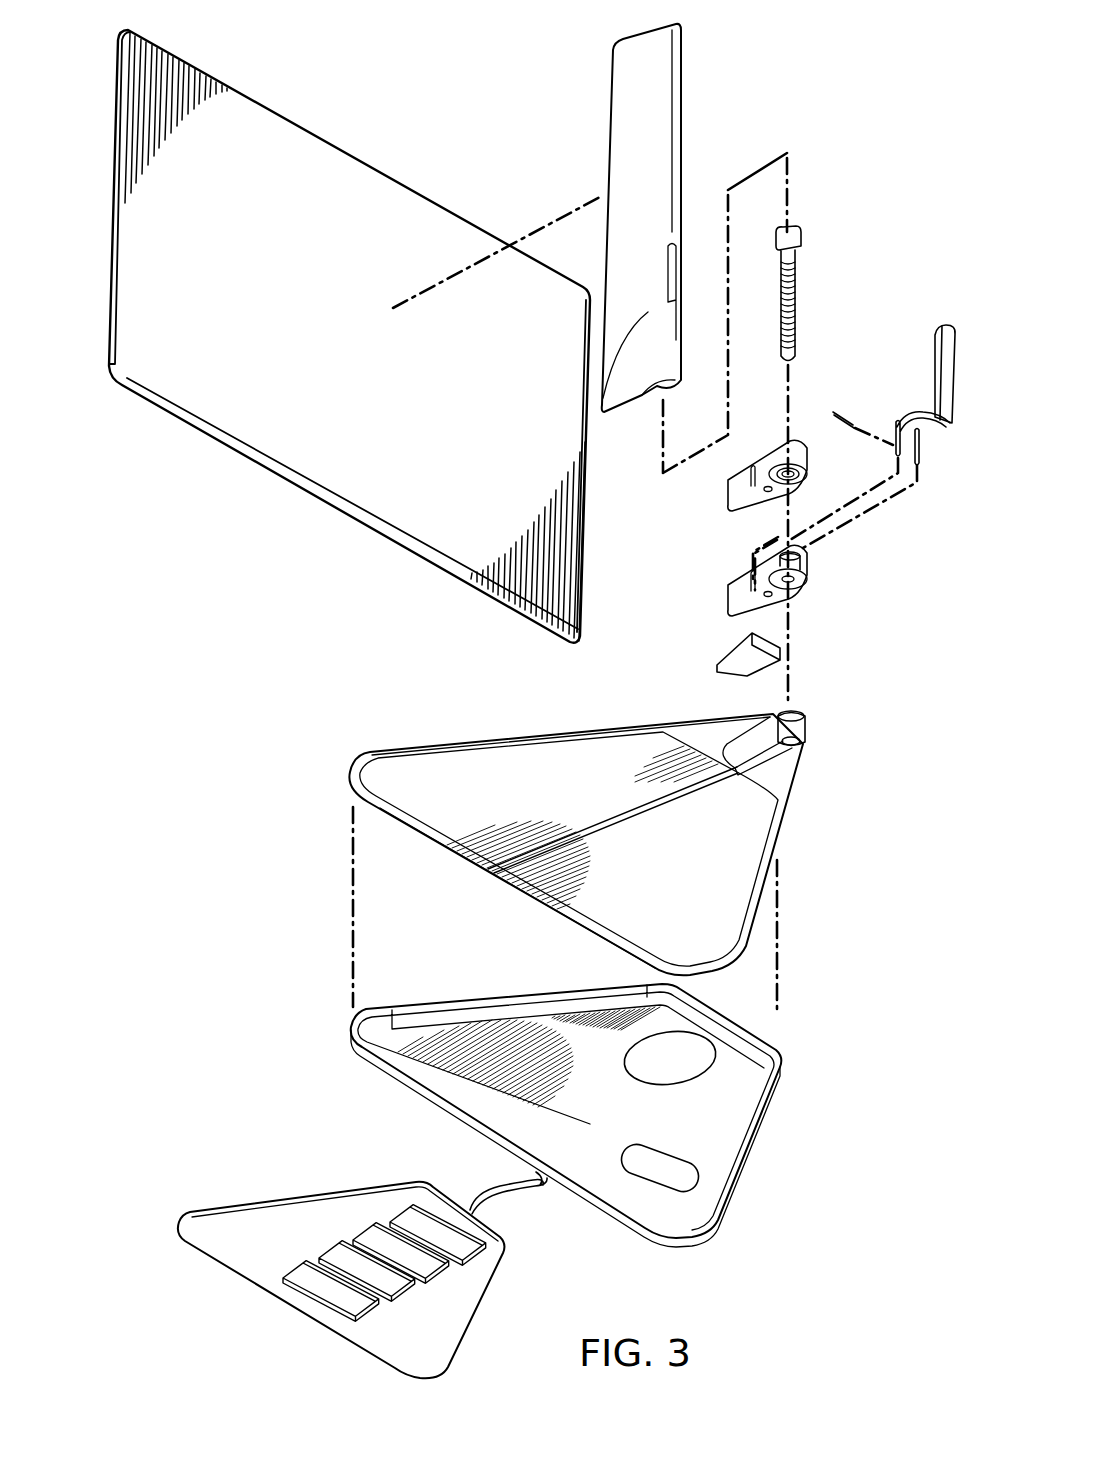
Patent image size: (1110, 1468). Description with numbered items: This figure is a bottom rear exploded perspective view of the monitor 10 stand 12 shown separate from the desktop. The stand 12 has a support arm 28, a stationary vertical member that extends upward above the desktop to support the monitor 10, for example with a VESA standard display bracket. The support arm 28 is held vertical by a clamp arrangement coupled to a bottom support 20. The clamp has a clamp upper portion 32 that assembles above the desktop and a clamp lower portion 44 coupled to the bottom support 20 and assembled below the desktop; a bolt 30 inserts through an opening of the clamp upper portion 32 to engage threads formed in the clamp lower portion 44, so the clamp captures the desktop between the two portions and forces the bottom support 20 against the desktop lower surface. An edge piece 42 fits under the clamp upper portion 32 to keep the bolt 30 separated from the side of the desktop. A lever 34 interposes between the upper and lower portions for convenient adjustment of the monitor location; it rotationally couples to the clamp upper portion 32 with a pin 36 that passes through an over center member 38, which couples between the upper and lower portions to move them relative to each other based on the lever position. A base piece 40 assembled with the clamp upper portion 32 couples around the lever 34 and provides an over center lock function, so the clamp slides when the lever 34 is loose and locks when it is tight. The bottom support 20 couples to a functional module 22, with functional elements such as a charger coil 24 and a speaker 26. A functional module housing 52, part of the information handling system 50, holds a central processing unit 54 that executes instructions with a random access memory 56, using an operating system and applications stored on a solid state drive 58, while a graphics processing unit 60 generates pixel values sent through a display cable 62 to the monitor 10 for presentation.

The monitor 10 is at (110, 198).
The stand 12 is at (751, 95).
The bottom support 20 is at (418, 750).
The functional module 22 is at (460, 1003).
The charger coil 24 is at (672, 1182).
The speaker 26 is at (690, 1085).
The support arm 28 is at (683, 162).
The bolt 30 is at (803, 244).
The clamp upper portion 32 is at (730, 495).
The lever 34 is at (948, 326).
The pin 36 is at (848, 420).
The over center member 38 is at (922, 416).
The base piece 40 is at (728, 600).
The edge piece 42 is at (716, 667).
The clamp lower portion 44 is at (808, 735).
The information handling system 50 is at (265, 1178).
The functional module housing 52 is at (176, 1251).
The central processing unit (CPU) 54 is at (392, 1206).
The random access memory (RAM) 56 is at (433, 1283).
The solid state drive (SSD) 58 is at (397, 1303).
The graphics processing unit (GPU) 60 is at (300, 1290).
The display cable 62 is at (545, 1188).